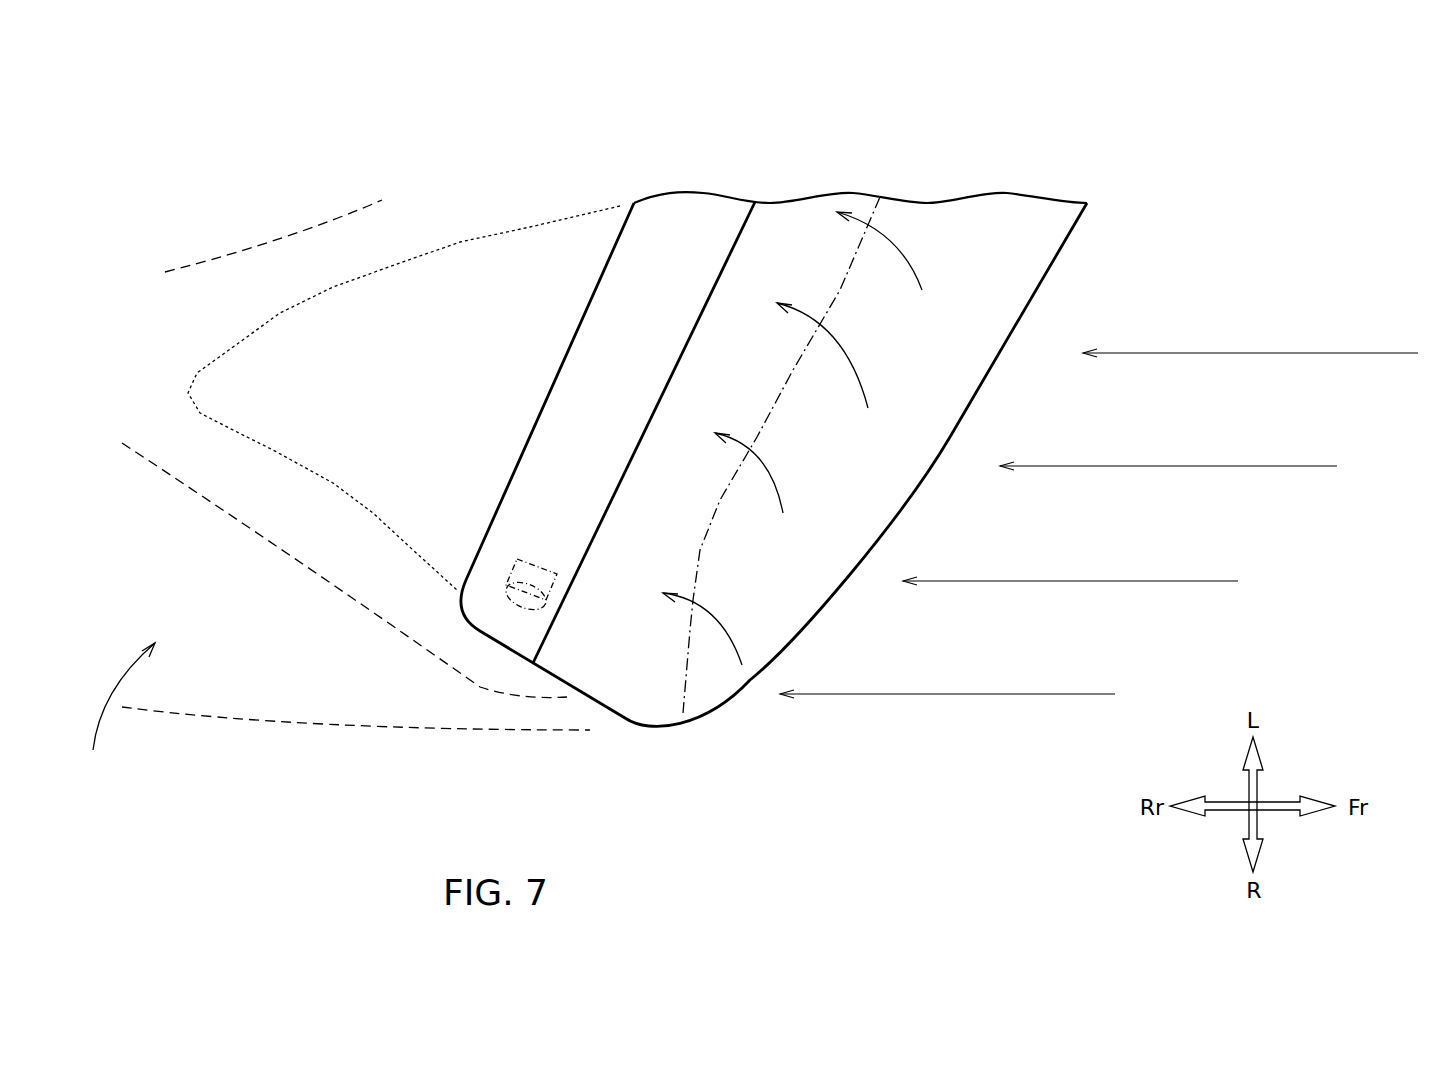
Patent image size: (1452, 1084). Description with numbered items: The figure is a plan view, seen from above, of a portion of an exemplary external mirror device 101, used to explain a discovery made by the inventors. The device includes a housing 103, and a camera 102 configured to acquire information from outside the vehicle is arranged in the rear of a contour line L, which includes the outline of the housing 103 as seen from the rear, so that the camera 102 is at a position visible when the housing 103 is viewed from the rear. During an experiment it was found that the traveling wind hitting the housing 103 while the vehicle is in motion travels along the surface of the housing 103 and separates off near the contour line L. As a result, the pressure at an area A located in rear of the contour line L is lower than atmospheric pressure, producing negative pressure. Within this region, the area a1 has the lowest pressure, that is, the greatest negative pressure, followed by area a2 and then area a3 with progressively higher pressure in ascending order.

The external mirror device 101 is at (1013, 163).
The camera 102 is at (538, 566).
The housing 103 is at (743, 278).
The contour line L is at (872, 214).
The area A is at (120, 715).
The area having the lowest pressure a1 is at (415, 404).
The area having second-lowest pressure a2 is at (291, 542).
The area having third-lowest pressure a3 is at (186, 652).